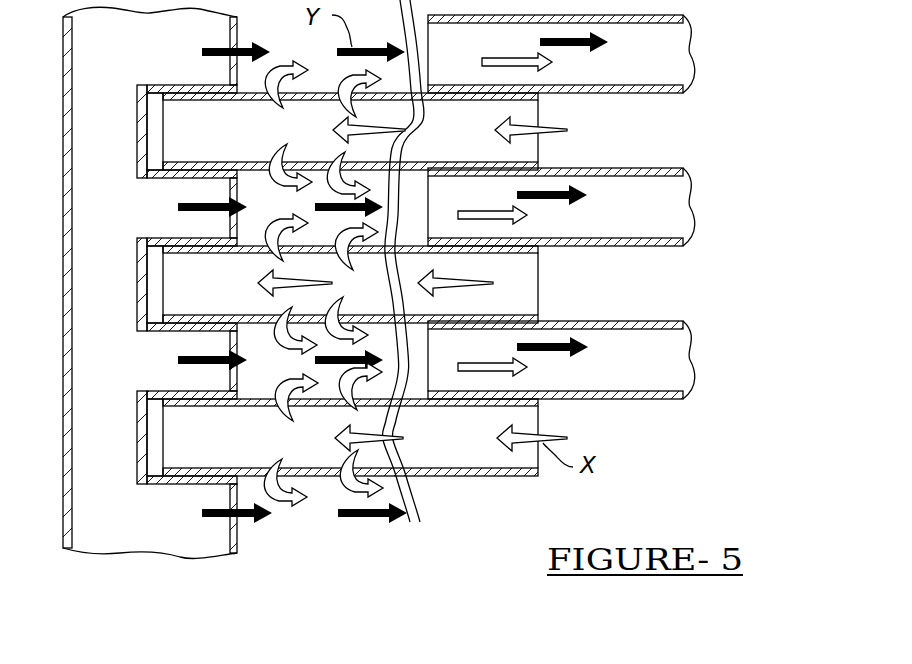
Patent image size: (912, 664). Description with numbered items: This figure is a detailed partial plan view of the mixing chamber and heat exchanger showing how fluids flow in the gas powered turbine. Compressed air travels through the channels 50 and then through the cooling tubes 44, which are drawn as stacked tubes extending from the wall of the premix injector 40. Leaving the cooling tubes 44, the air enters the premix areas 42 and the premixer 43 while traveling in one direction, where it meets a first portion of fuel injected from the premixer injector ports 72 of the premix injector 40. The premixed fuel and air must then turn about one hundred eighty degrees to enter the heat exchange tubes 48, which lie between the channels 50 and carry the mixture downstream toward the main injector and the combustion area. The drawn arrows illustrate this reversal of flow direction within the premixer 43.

The premix injector 40 is at (102, 527).
The premix areas 42 is at (262, 379).
The premixer 43 is at (320, 527).
The cooling tubes 44 is at (195, 447).
The heat exchange tubes 48 is at (665, 360).
The channels 50 is at (657, 285).
The premixer injector ports 72 is at (238, 523).